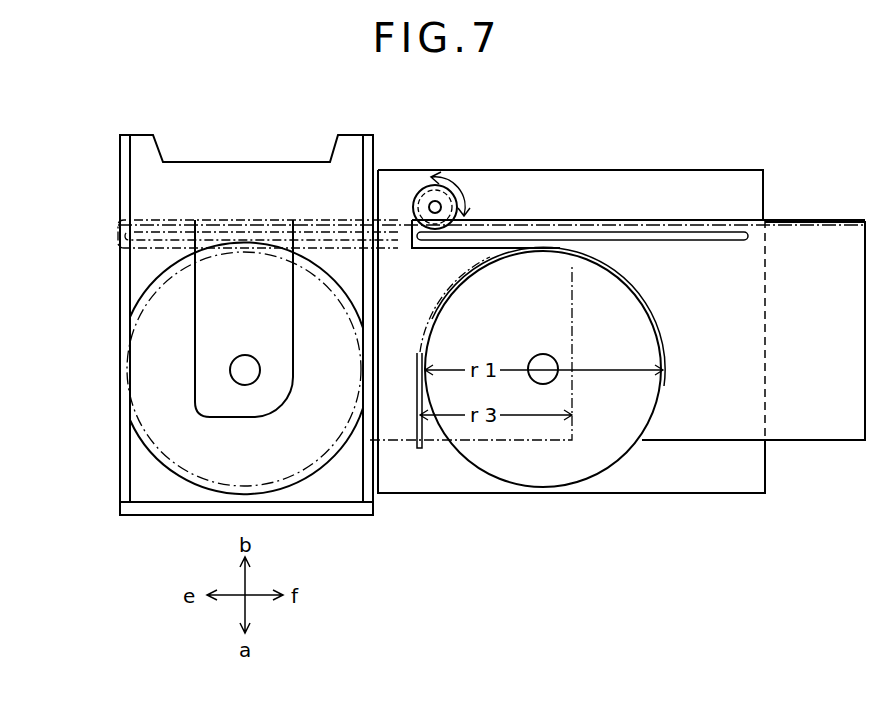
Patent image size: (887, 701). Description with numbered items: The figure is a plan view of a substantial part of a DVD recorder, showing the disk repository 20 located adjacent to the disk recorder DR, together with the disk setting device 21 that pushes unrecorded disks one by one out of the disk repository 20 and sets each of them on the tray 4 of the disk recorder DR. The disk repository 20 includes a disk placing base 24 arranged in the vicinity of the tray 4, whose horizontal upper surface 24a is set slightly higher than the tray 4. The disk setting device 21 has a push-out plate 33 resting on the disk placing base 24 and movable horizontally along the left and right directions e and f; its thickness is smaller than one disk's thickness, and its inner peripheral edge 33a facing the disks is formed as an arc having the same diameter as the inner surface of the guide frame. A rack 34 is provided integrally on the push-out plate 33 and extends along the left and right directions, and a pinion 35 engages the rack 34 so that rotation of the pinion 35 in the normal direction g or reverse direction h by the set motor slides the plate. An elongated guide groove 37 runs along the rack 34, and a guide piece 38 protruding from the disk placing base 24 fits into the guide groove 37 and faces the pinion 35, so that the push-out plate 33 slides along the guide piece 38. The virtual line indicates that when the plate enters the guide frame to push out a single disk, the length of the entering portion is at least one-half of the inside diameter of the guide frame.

The tray 4 is at (150, 480).
The disk recorder DR is at (106, 162).
The disk repository 20 is at (419, 355).
The disk setting device 21 is at (843, 207).
The disk placing base 24 is at (472, 503).
The horizontal upper surface 24a is at (412, 470).
The push-out plate 33 is at (832, 415).
The inner peripheral edge 33a is at (665, 343).
The rack 34 is at (706, 220).
The pinion 35 is at (433, 185).
The guide groove 37 is at (704, 243).
The guide piece 38 is at (430, 250).